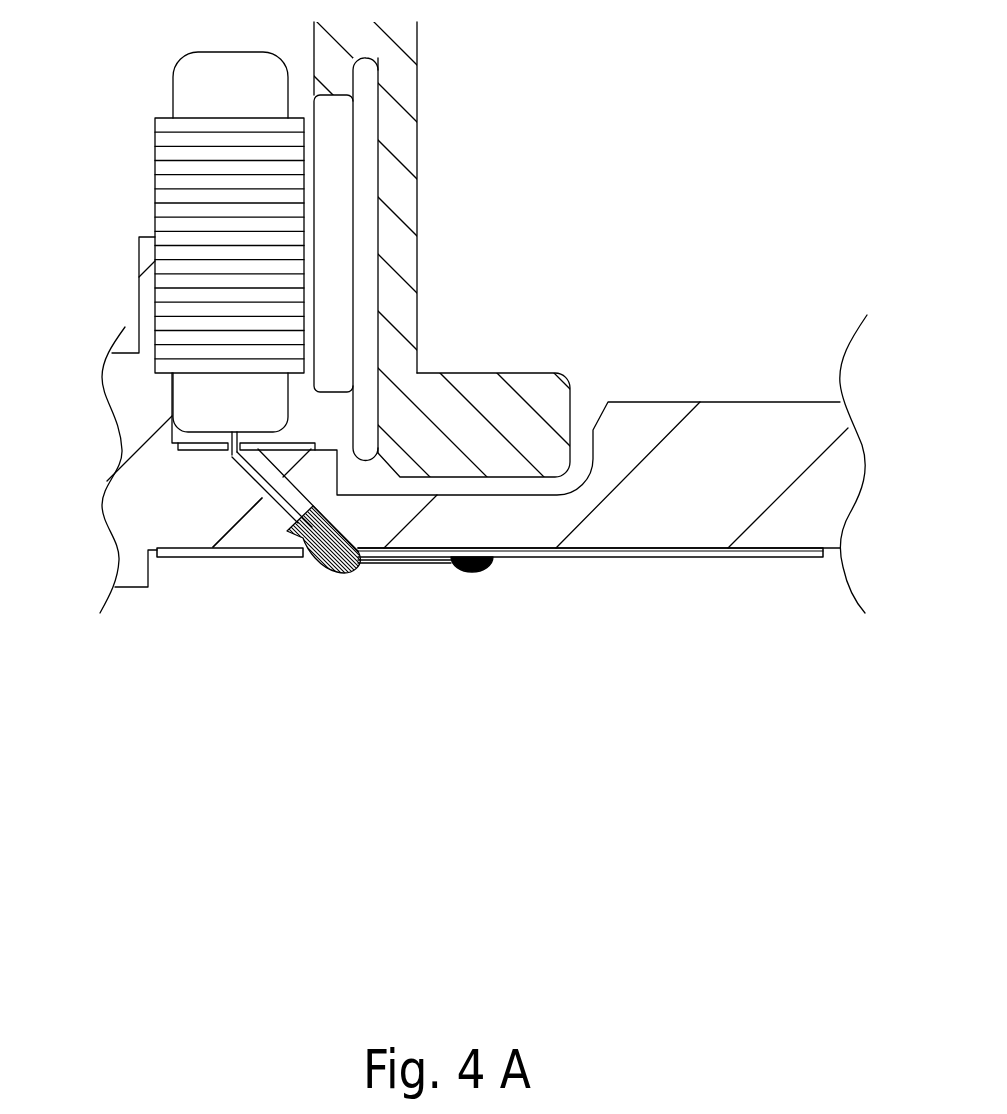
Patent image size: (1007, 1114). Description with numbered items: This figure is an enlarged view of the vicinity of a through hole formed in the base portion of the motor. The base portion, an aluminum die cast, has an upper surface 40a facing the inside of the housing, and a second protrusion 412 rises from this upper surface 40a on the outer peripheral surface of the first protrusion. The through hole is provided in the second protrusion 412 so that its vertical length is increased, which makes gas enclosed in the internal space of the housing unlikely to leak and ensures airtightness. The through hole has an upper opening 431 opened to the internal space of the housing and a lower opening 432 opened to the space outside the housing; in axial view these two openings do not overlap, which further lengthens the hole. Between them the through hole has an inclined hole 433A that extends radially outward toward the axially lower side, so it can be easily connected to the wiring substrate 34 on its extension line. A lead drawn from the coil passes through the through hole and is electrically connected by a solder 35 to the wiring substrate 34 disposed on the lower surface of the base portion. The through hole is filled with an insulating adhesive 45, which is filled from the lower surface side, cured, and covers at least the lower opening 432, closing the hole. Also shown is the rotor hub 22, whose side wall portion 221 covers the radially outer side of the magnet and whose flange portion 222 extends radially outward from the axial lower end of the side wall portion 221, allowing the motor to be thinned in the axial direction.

The rotor hub 22 is at (426, 250).
The side wall portion 221 is at (403, 262).
The flange portion 222 is at (470, 390).
The upper surface 40a is at (485, 492).
The second protrusion 412 is at (214, 517).
The upper opening 431 is at (228, 458).
The inclined hole 433A is at (288, 516).
The adhesive 45 is at (332, 578).
The lower opening 432 is at (362, 538).
The wiring substrate 34 is at (645, 562).
The solder 35 is at (484, 576).